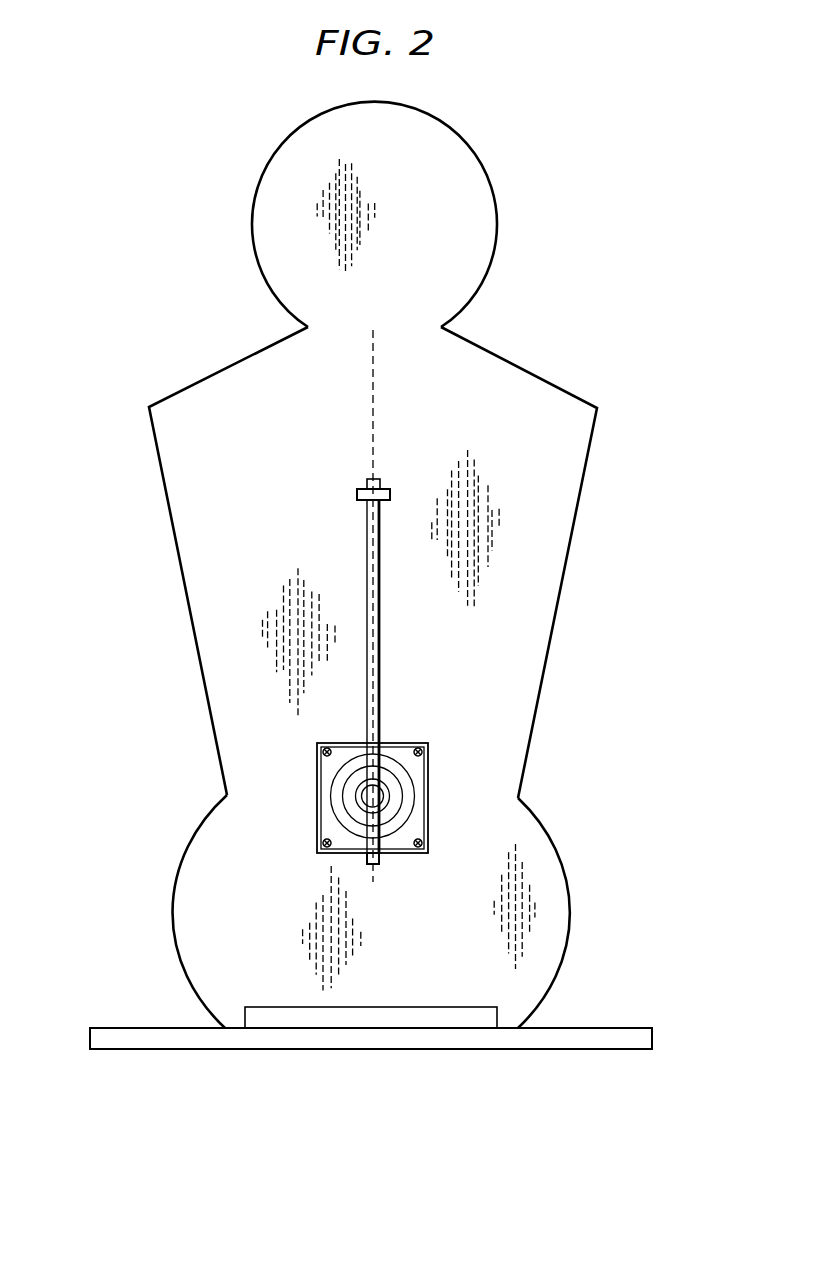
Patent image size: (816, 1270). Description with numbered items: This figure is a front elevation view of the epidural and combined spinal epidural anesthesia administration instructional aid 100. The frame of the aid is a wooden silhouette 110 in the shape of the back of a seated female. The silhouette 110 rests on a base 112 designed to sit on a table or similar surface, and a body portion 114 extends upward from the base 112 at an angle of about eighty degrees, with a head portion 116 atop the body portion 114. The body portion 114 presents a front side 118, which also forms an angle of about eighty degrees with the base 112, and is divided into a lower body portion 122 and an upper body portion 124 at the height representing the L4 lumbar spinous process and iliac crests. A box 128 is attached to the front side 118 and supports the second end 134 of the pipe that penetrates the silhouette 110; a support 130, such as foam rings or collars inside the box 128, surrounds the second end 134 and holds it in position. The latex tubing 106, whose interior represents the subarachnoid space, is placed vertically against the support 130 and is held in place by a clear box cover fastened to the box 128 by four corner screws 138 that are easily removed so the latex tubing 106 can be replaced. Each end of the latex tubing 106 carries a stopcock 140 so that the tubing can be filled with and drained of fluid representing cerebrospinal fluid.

The epidural and combined spinal epidural anesthesia administration instructional ai 100 is at (563, 350).
The latex tubing 106 is at (380, 643).
The wooden silhouette 110 is at (587, 605).
The base 112 is at (620, 1050).
The body portion 114 is at (158, 605).
The head portion 116 is at (497, 227).
The front side 118 is at (263, 456).
The lower body portion 122 is at (573, 913).
The upper body portion 124 is at (583, 486).
The box 128 is at (429, 764).
The support 130 is at (411, 829).
The second end 134 is at (390, 797).
The corner screws 138 is at (318, 743).
The stopcock 140 is at (380, 486).